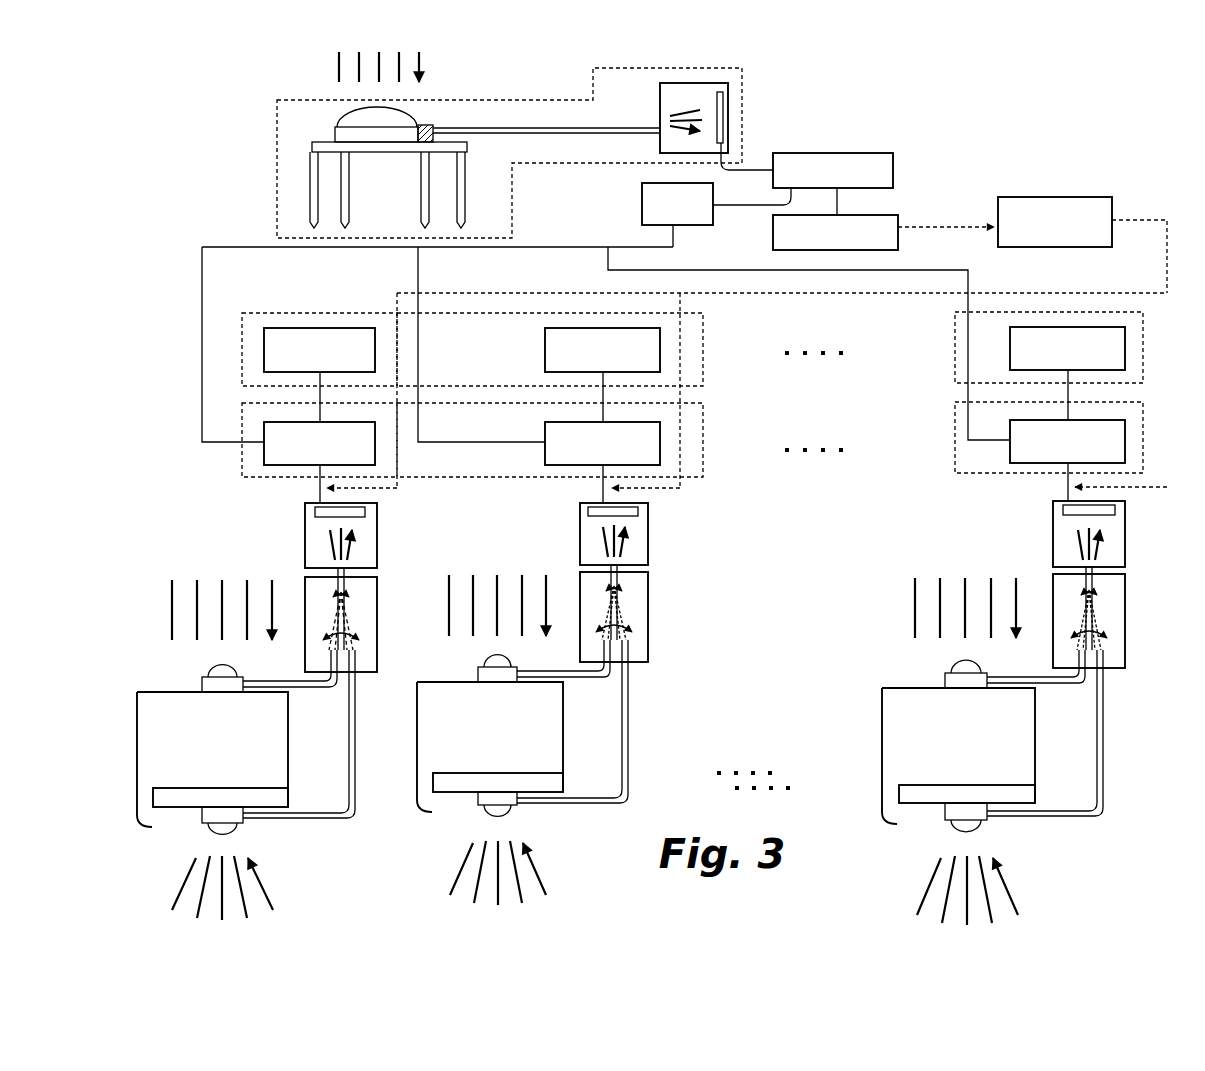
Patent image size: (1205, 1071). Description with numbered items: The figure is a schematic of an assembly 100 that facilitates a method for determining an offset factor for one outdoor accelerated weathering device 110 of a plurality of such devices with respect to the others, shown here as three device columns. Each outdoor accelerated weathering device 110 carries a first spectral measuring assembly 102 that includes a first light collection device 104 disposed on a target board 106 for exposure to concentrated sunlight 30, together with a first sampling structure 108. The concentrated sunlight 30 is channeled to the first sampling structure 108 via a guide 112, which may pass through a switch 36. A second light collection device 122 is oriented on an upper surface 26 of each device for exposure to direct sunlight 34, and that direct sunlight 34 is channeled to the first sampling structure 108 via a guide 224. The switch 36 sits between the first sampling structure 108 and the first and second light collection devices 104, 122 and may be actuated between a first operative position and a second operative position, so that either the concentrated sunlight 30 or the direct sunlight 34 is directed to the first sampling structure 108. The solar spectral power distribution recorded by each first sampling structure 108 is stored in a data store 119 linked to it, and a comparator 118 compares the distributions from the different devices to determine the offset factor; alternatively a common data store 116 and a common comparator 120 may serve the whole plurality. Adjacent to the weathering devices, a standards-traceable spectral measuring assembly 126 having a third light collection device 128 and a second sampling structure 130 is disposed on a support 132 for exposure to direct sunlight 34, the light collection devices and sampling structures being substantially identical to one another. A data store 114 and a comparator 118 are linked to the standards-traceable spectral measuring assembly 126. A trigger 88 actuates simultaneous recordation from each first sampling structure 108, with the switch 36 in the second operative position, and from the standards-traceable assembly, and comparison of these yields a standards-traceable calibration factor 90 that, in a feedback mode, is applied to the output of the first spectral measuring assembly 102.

The upper surface 26 is at (150, 695).
The concentrated sunlight 30 is at (270, 900).
The direct sunlight 34 is at (419, 55).
The switch 36 is at (377, 643).
The trigger 88 is at (712, 225).
The standards-traceable calibration factor 90 is at (1112, 197).
The assembly 100 is at (990, 133).
The first spectral measuring assembly 102 is at (319, 845).
The first light collection device 104 is at (205, 823).
The target board 106 is at (230, 788).
The first sampling structure 108 is at (320, 512).
The outdoor accelerated weathering device 110 is at (149, 762).
The guide 112 is at (355, 783).
The data store 114 is at (878, 153).
The common data store 116 is at (265, 403).
The comparator 118 is at (888, 215).
The data store 119 is at (263, 448).
The common comparator 120 is at (268, 312).
The second light collection device 122 is at (200, 680).
The standards-traceable spectral measuring assembly 126 is at (492, 100).
The third light collection device 128 is at (335, 130).
The second sampling structure 130 is at (721, 110).
The support 132 is at (312, 145).
The guide 224 is at (573, 680).